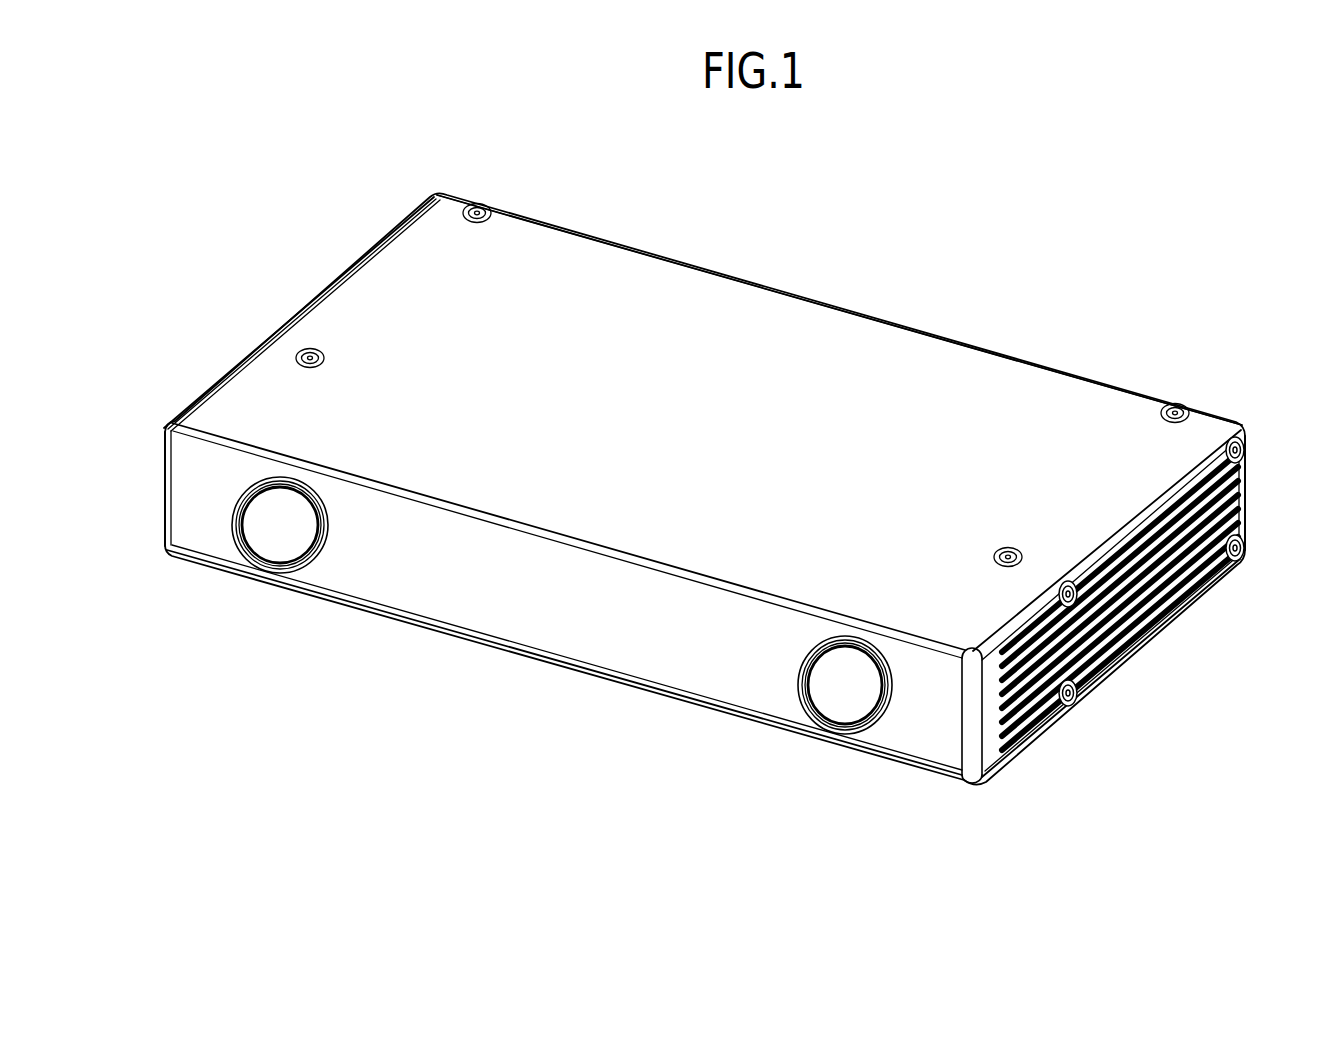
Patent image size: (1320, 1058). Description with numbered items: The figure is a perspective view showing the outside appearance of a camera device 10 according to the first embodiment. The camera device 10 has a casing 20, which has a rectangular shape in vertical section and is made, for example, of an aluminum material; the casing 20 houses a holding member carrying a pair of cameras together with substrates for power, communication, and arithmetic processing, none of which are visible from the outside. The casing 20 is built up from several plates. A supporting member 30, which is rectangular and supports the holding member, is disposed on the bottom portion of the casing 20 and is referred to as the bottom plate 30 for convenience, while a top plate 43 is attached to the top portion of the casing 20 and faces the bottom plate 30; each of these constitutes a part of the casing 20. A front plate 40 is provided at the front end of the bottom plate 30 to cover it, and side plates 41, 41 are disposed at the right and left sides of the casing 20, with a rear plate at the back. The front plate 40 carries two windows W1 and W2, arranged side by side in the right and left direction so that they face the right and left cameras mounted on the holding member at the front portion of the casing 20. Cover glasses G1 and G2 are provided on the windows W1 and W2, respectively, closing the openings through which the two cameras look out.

The camera device 10 is at (890, 278).
The casing 20 is at (994, 345).
The supporting member 30 is at (915, 767).
The front plate 40 is at (530, 625).
The side plate 41 is at (268, 330).
The top plate 43 is at (605, 285).
The window W1 is at (273, 568).
The window W2 is at (836, 732).
The cover glass G1 is at (293, 532).
The cover glass G2 is at (835, 680).